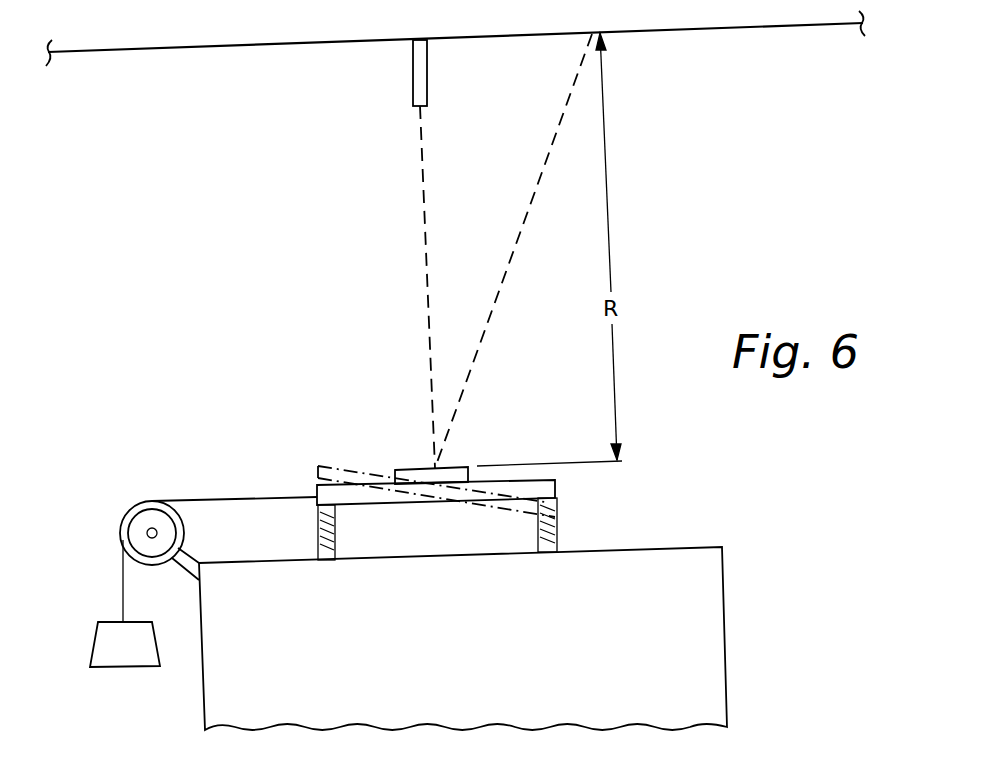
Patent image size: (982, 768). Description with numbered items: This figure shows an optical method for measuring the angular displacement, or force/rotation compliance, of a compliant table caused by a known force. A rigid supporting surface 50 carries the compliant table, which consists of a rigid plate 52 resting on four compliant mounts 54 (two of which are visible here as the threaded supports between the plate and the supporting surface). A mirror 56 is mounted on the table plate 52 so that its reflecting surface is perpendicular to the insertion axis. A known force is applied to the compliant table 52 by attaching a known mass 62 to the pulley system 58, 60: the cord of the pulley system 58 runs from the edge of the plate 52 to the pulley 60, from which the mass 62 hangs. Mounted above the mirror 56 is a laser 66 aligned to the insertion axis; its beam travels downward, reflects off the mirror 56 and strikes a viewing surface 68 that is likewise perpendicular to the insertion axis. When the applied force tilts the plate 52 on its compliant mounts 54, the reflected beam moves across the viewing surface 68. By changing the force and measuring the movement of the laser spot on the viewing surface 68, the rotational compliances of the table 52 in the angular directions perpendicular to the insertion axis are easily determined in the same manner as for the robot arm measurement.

The rigid supporting surface 50 is at (477, 657).
The rigid plate 52 is at (556, 485).
The compliant mounts 54 is at (317, 528).
The mirror 56 is at (455, 468).
The pulley system 58 is at (212, 498).
The pulley system 60 is at (143, 520).
The known mass 62 is at (131, 670).
The laser 66 is at (413, 68).
The viewing surface 68 is at (667, 33).